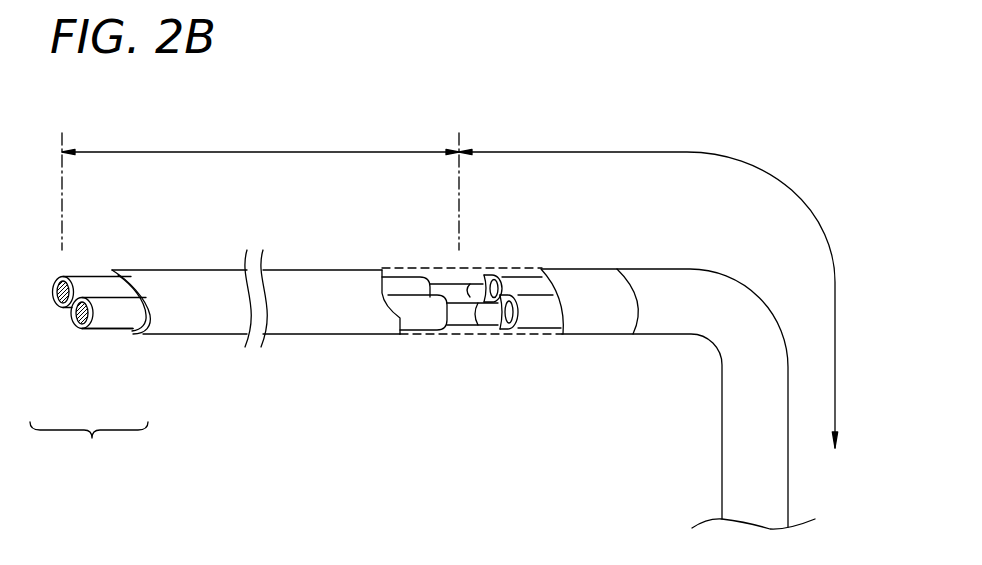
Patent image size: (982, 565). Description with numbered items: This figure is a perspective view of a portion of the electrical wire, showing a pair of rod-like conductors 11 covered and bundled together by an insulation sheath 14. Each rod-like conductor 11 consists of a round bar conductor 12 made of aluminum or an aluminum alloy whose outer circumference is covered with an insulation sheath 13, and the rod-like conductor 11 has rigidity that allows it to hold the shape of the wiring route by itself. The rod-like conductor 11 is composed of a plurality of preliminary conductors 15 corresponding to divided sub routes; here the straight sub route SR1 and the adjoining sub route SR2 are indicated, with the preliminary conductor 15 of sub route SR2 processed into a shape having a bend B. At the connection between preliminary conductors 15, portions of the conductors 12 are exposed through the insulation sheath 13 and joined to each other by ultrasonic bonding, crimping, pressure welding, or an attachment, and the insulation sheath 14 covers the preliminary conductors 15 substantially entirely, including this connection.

The rod-like conductor 11 is at (89, 447).
The conductor 12 is at (63, 333).
The insulation sheath 13 is at (108, 333).
The insulation sheath 14 is at (190, 270).
The preliminary conductor 15 is at (88, 273).
The bend B is at (730, 300).
The sub route SR1 is at (260, 186).
The sub route SR2 is at (648, 285).